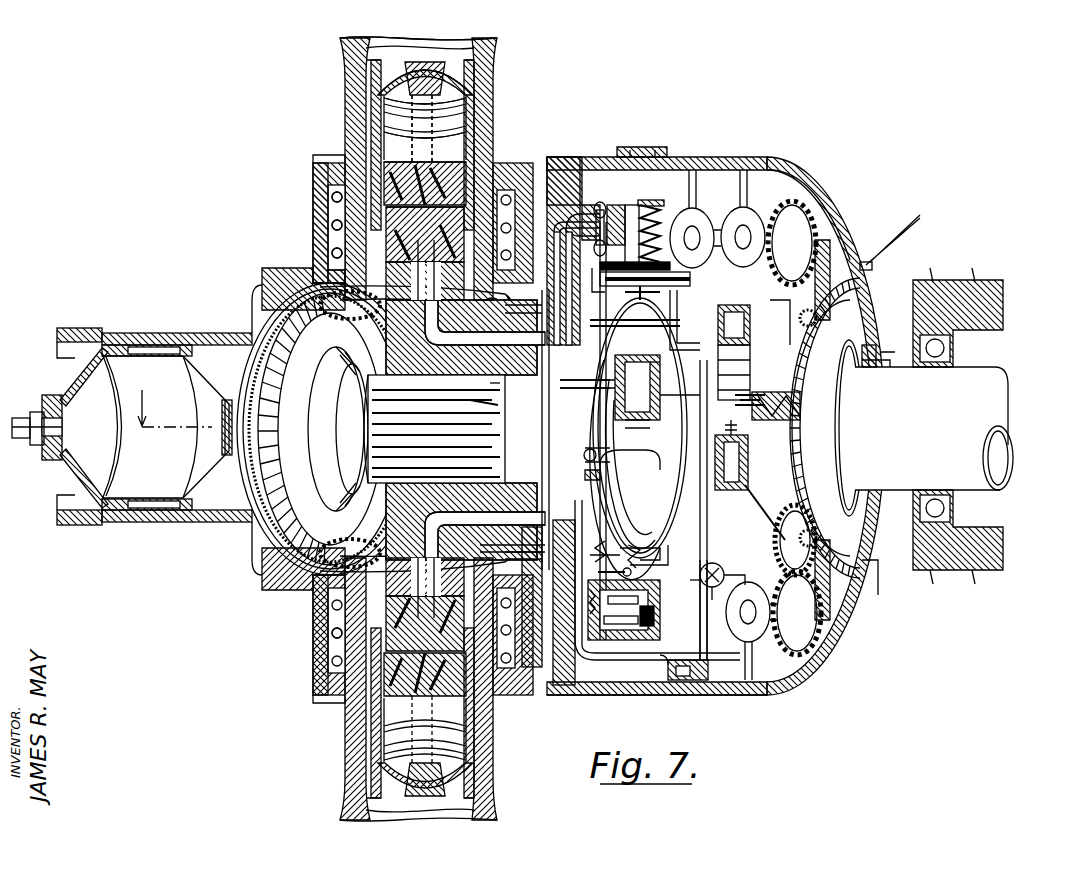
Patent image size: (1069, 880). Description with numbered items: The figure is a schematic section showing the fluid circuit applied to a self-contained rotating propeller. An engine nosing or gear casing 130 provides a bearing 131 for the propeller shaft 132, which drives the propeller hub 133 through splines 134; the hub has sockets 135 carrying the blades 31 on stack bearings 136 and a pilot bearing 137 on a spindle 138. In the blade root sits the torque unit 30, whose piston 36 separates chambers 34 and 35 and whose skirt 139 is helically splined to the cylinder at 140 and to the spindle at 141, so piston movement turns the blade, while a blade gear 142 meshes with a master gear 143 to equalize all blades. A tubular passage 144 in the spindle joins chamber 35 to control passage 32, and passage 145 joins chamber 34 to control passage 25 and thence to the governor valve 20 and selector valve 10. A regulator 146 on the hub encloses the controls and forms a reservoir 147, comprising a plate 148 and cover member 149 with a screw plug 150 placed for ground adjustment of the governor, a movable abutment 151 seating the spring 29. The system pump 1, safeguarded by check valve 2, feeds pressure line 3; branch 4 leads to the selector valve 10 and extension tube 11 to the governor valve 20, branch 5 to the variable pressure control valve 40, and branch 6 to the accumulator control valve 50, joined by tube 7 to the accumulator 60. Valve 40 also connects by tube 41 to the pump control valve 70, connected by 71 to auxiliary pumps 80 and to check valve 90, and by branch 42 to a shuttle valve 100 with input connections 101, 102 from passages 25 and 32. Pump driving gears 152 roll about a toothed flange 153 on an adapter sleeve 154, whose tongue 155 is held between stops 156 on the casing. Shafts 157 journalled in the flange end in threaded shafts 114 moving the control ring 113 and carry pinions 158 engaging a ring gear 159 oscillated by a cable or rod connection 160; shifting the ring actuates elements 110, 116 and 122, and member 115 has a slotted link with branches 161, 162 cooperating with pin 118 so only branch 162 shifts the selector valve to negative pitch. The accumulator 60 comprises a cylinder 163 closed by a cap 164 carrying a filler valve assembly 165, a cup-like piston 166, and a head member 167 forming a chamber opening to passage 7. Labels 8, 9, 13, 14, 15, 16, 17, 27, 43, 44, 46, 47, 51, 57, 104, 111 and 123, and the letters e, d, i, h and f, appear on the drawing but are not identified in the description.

The system pump 1 is at (755, 632).
The check valve 2 is at (712, 598).
The pressure line 3 is at (712, 568).
The branch 4 is at (649, 555).
The branch 5 is at (715, 577).
The branch 6 is at (660, 661).
The tube 7 is at (360, 490).
The section line 8- 8 is at (535, 398).
The lever 9 is at (630, 625).
The range selector valve 10 is at (647, 430).
The extension tube 11 is at (542, 400).
The valve 13 is at (680, 403).
The valve body 14 is at (631, 387).
The conduit 15 is at (600, 395).
The port 16 is at (660, 385).
The diaphragm chamber 17 is at (640, 360).
The governor valve 20 is at (628, 205).
The control passage 25 is at (545, 450).
The lever 27 is at (637, 256).
The spring 29 is at (657, 233).
The torque unit 30 is at (470, 135).
The blade 31 is at (497, 48).
The control passage 32 is at (470, 340).
The chamber 34 is at (395, 240).
The chamber 35 is at (390, 93).
The piston 36 is at (385, 115).
The variable pressure control valve 40 is at (732, 565).
The tube 41 is at (770, 340).
The branch 42 is at (710, 610).
The gear 43 is at (791, 540).
The shaft 44 is at (765, 512).
The gear 46 is at (794, 540).
The valve 47 is at (740, 490).
The accumulator control valve 50 is at (672, 632).
The lever 51 is at (649, 546).
The valve 57 is at (656, 613).
The accumulator 60 is at (165, 522).
The pump control valve 70 is at (728, 308).
The connection 71 is at (718, 316).
The auxiliary pumps 80 is at (700, 215).
The check valve 90 is at (800, 406).
The shuttle valve 100 is at (730, 695).
The input connection 101 is at (700, 680).
The input connection 102 is at (630, 668).
The port 104 is at (682, 680).
The element 110 is at (620, 288).
The pivot 111 is at (645, 300).
The control ring 113 is at (625, 323).
The threaded shafts 114 is at (584, 474).
The member 115 is at (590, 450).
The element 116 is at (580, 454).
The pin or abutment 118 is at (639, 455).
The element 122 is at (620, 555).
The rod 123 is at (607, 565).
The engine nosing or gear casing 130 is at (1003, 300).
The bearing 131 is at (950, 510).
The propeller shaft 132 is at (390, 420).
The propeller hub 133 is at (262, 282).
The splines 134 is at (490, 405).
The socket 135 is at (318, 168).
The stack bearings 136 is at (332, 198).
The pilot bearing 137 is at (332, 252).
The spindle 138 is at (332, 226).
The skirt 139 is at (440, 130).
The helical splines 140 is at (392, 148).
The helical splines 141 is at (395, 200).
The blade gear 142 is at (330, 275).
The master gear 143 is at (275, 325).
The tubular passage 144 is at (430, 85).
The passage 145 is at (498, 372).
The regulator 146 is at (712, 157).
The reservoir 147 is at (775, 160).
The plate 148 is at (575, 160).
The cover member 149 is at (810, 190).
The screw plug 150 is at (645, 147).
The movable abutment 151 is at (650, 204).
The pump driving gears 152 is at (812, 220).
The toothed flange 153 is at (820, 565).
The adapter sleeve 154 is at (830, 458).
The lug or tongue 155 is at (880, 345).
The brackets or stops 156 is at (880, 360).
The shafts 157 is at (812, 345).
The pinion 158 is at (815, 325).
The ring gear 159 is at (790, 437).
The cable or rod connection 160 is at (922, 226).
The branch 161 is at (632, 467).
The branch 162 is at (636, 441).
The cylinder 163 is at (208, 522).
The removable cap or plug 164 is at (70, 460).
The filler valve assembly 165 is at (25, 440).
The cup-like piston 166 is at (150, 500).
The head member 167 is at (320, 470).
The valve stem e is at (600, 202).
The spring seat d is at (648, 245).
The port i is at (745, 335).
The port h is at (750, 395).
The port f is at (748, 480).